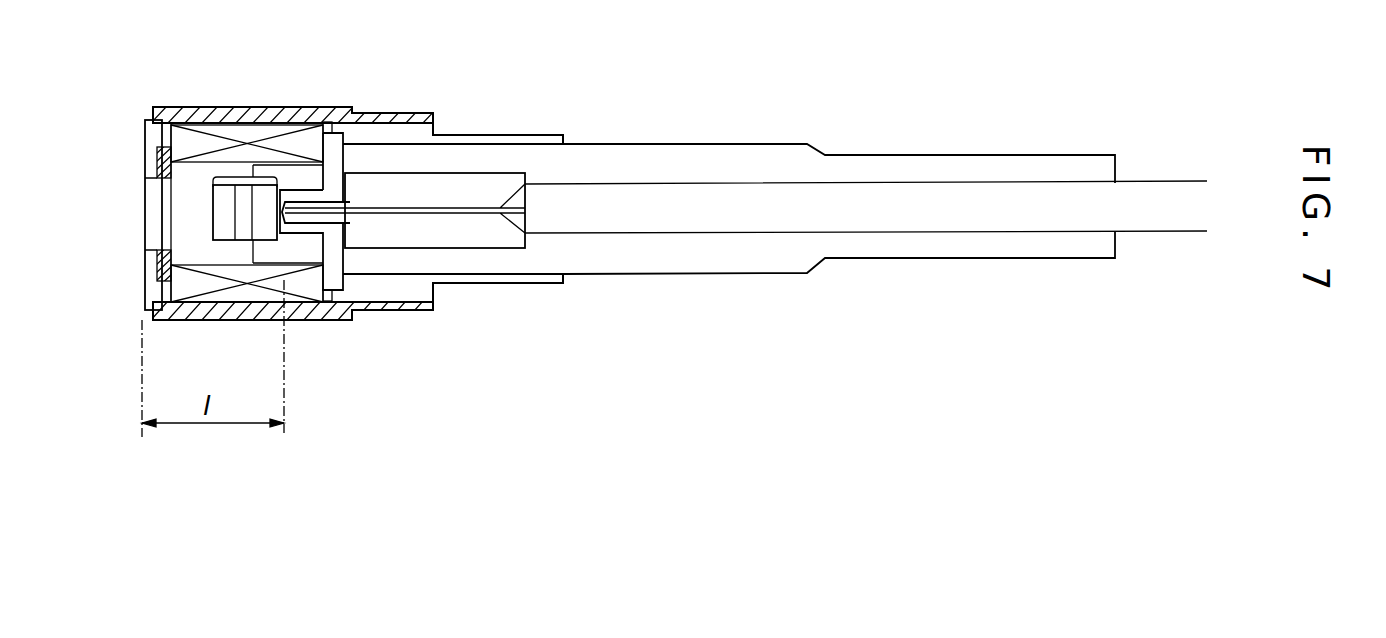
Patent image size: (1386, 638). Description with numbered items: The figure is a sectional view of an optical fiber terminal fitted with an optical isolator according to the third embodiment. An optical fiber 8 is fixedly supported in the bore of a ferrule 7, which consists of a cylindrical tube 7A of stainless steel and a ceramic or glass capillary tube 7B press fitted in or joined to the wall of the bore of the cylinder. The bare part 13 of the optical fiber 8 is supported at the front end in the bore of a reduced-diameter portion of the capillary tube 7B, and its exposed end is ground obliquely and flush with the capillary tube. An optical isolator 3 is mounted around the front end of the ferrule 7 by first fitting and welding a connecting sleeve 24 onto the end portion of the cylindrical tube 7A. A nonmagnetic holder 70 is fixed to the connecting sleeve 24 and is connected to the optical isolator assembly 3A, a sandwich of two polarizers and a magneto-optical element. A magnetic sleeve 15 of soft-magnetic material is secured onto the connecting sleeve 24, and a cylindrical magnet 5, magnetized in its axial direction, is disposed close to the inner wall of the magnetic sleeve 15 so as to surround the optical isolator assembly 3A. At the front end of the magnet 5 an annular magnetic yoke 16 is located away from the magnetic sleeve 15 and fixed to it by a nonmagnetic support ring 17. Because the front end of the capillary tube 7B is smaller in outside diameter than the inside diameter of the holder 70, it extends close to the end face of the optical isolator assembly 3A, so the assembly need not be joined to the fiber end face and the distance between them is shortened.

The optical isolator 3 is at (356, 218).
The optical isolator assembly 3A is at (242, 176).
The cylindrical magnet 5 is at (195, 292).
The ferrule 7 is at (866, 214).
The cylindrical tube 7A is at (756, 143).
The capillary tube 7B is at (500, 250).
The optical fiber 8 is at (1163, 233).
The bare part of the optical fiber 13 is at (377, 207).
The magnetic sleeve 15 is at (181, 107).
The annular magnetic yoke 16 is at (162, 252).
The nonmagnetic support ring 17 is at (145, 143).
The connecting sleeve 24 is at (492, 135).
The nonmagnetic holder 70 is at (330, 292).